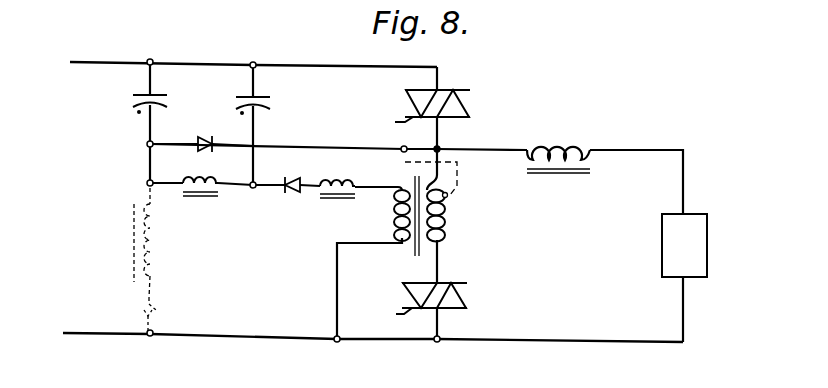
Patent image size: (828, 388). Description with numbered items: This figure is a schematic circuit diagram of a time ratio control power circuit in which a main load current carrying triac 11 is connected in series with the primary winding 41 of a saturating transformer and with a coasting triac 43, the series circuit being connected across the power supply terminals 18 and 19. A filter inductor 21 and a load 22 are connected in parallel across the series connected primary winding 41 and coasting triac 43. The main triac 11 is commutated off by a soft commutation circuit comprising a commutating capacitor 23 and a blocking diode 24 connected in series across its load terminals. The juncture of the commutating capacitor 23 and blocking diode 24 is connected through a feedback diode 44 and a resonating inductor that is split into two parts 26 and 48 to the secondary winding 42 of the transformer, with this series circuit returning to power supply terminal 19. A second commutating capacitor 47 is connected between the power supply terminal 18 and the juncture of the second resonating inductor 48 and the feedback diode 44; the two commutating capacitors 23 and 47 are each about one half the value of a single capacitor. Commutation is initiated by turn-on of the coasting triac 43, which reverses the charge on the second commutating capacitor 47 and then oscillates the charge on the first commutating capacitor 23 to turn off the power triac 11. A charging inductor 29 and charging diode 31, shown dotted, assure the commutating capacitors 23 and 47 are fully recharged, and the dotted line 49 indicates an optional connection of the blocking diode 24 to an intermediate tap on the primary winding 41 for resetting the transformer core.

The power supply terminal 18 is at (110, 61).
The power supply terminal 19 is at (83, 333).
The main load current carrying triac 11 is at (465, 99).
The filter inductor 21 is at (565, 140).
The load 22 is at (709, 244).
The commutating capacitor 23 is at (134, 93).
The blocking diode 24 is at (205, 138).
The resonating inductor 26 is at (348, 180).
The charging inductor 29 is at (152, 241).
The charging diode 31 is at (142, 308).
The primary winding 41 is at (446, 233).
The secondary winding 42 is at (392, 223).
The coasting triac 43 is at (468, 297).
The feedback diode 44 is at (295, 195).
The second commutating capacitor 47 is at (268, 96).
The second resonating inductor 48 is at (213, 195).
The dotted line 49 is at (462, 181).